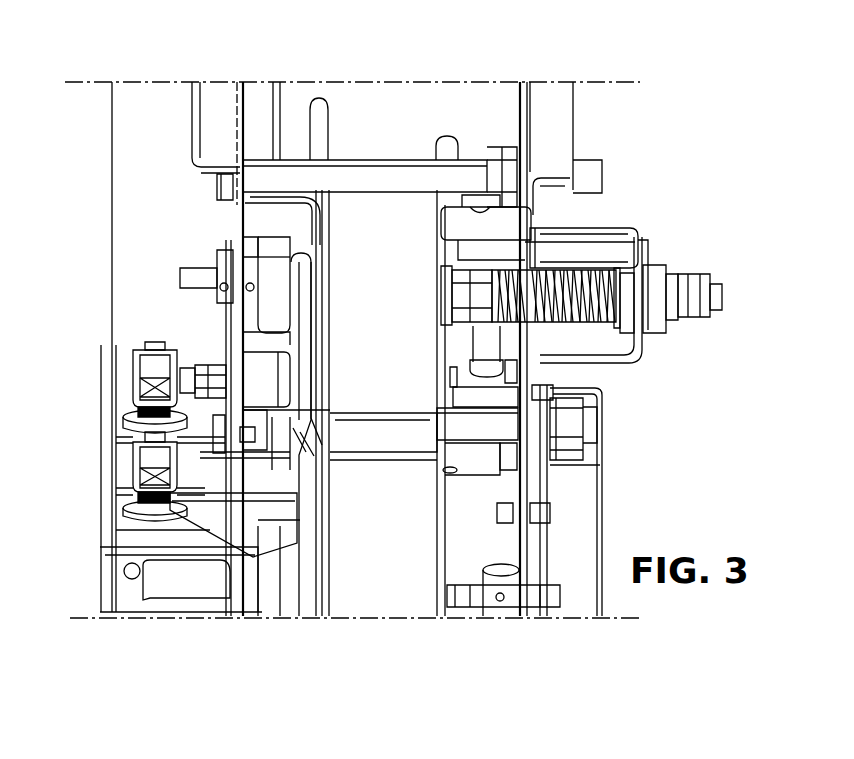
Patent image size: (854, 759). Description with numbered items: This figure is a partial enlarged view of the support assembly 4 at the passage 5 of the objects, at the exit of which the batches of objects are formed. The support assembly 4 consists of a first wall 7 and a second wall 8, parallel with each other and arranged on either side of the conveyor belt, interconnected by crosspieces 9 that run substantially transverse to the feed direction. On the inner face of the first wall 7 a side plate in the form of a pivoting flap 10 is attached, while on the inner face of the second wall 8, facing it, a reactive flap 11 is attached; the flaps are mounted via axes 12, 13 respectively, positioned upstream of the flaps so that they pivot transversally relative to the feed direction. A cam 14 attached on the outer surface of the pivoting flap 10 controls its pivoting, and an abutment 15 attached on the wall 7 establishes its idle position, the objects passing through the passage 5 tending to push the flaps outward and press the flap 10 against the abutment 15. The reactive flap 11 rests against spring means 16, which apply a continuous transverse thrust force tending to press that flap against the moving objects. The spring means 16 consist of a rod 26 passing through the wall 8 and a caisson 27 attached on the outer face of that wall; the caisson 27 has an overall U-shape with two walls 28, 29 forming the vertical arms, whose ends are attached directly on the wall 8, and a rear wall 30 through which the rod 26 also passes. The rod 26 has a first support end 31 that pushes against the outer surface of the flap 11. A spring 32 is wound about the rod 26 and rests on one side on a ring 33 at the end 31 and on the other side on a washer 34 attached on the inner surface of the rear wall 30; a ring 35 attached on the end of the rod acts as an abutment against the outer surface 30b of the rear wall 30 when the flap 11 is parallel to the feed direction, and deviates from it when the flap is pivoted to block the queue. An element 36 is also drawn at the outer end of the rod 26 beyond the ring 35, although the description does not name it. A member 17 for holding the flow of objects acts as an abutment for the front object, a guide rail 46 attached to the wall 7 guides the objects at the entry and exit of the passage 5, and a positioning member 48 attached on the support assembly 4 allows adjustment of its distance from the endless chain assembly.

The support assembly 4 is at (552, 108).
The passage 5 is at (404, 577).
The first wall 7 is at (219, 97).
The second wall 8 is at (530, 460).
The crosspieces 9 is at (376, 177).
The pivoting flap 10 is at (329, 348).
The flap 11 is at (437, 372).
The axis 12 is at (290, 250).
The axis 13 is at (470, 331).
The cam 14 is at (282, 527).
The abutment 15 is at (258, 372).
The spring means 16 is at (602, 248).
The holding member 17 is at (486, 535).
The rod 26 is at (637, 366).
The caisson 27 is at (640, 236).
The wall 28 is at (587, 237).
The wall 29 is at (595, 322).
The rear wall 30 is at (637, 323).
The outer surface 30b is at (643, 343).
The first support end 31 is at (460, 292).
The spring 32 is at (613, 270).
The ring 33 is at (458, 277).
The washer 34 is at (627, 300).
The ring 35 is at (653, 277).
The nut 36 is at (716, 290).
The guide rail 46 is at (326, 108).
The positioning member 48 is at (187, 572).